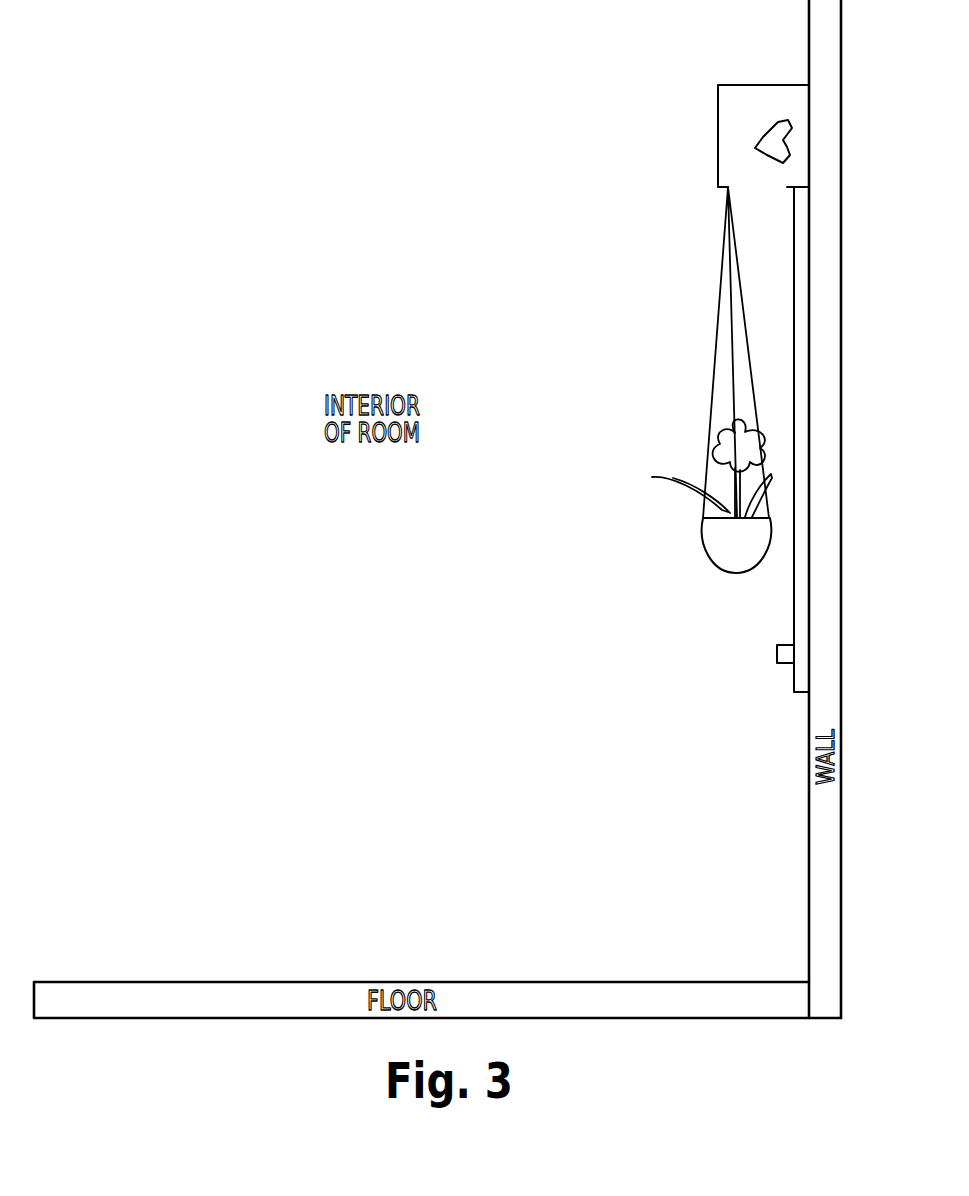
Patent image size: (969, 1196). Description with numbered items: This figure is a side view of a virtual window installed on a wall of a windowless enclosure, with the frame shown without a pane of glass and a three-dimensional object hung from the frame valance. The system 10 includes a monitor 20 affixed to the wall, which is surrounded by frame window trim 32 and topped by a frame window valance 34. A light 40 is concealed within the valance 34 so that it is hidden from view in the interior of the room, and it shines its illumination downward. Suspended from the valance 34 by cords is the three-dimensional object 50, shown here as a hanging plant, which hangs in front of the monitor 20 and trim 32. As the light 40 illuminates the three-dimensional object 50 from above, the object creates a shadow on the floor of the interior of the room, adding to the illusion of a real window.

The system 10 is at (650, 183).
The monitor 20 is at (795, 260).
The frame window trim 32 is at (795, 340).
The frame window valance 34 is at (733, 100).
The light 40 is at (757, 148).
The 3D object 50 is at (703, 555).